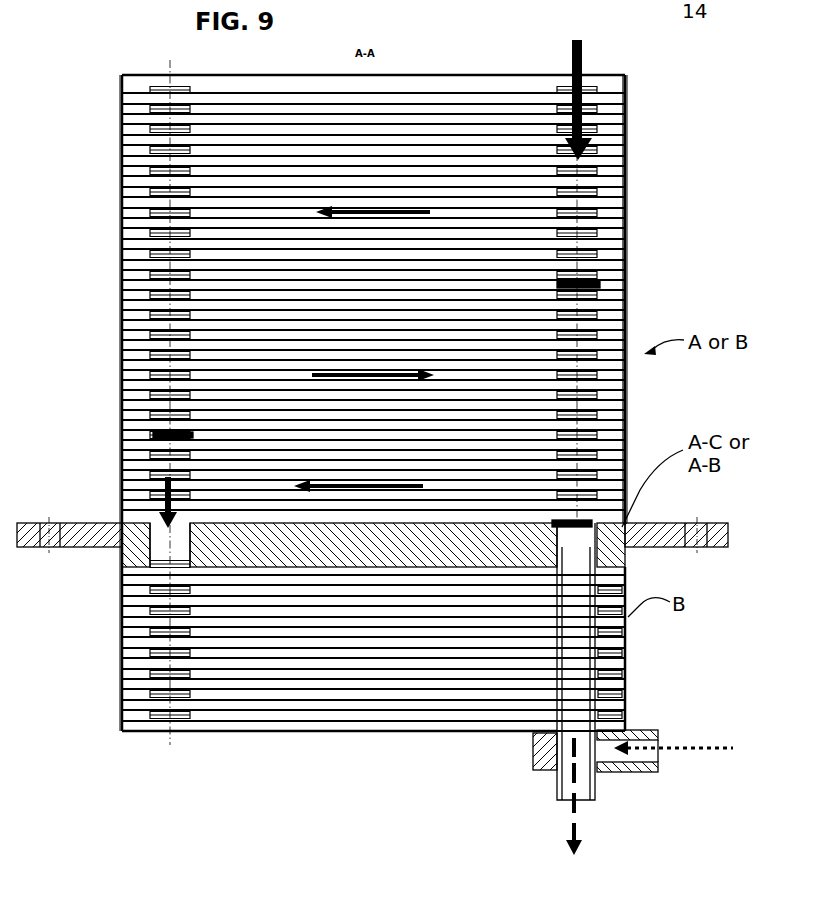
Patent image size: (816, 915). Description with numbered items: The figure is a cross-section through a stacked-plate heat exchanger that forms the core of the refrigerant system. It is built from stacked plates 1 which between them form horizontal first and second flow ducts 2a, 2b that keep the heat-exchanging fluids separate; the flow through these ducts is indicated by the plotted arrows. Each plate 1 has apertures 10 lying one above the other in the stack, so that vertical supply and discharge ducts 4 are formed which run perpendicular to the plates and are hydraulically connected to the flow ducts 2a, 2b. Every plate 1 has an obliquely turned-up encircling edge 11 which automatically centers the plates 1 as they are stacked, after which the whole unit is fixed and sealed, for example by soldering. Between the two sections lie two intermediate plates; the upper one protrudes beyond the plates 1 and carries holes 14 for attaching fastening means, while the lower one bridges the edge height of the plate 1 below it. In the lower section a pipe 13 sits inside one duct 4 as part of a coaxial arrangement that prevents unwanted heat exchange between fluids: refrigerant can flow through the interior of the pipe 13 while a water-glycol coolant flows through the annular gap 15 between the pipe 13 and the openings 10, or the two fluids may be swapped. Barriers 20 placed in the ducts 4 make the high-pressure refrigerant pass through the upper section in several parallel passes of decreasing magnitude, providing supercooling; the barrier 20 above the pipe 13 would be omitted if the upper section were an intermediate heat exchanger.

The stacked plates 1 is at (687, 158).
The first flow ducts 2a is at (218, 201).
The second flow ducts 2b is at (207, 211).
The supply and discharge ducts 4 is at (167, 400).
The apertures 10 is at (395, 0).
The encircling edge 11 is at (625, 200).
The pipe 13 is at (593, 673).
The holes 14 is at (694, 540).
The annular gap 15 is at (545, 670).
The barrier 20 is at (158, 443).